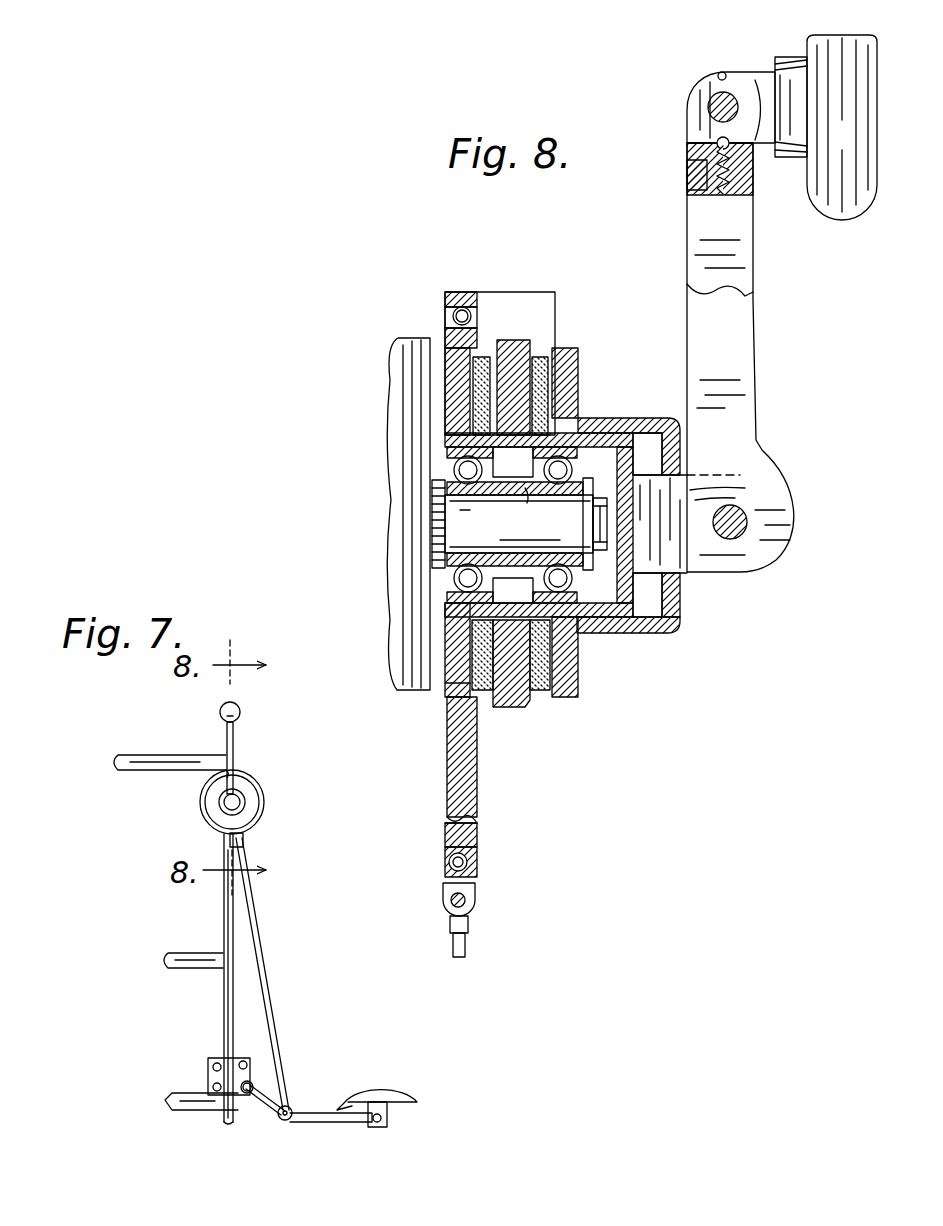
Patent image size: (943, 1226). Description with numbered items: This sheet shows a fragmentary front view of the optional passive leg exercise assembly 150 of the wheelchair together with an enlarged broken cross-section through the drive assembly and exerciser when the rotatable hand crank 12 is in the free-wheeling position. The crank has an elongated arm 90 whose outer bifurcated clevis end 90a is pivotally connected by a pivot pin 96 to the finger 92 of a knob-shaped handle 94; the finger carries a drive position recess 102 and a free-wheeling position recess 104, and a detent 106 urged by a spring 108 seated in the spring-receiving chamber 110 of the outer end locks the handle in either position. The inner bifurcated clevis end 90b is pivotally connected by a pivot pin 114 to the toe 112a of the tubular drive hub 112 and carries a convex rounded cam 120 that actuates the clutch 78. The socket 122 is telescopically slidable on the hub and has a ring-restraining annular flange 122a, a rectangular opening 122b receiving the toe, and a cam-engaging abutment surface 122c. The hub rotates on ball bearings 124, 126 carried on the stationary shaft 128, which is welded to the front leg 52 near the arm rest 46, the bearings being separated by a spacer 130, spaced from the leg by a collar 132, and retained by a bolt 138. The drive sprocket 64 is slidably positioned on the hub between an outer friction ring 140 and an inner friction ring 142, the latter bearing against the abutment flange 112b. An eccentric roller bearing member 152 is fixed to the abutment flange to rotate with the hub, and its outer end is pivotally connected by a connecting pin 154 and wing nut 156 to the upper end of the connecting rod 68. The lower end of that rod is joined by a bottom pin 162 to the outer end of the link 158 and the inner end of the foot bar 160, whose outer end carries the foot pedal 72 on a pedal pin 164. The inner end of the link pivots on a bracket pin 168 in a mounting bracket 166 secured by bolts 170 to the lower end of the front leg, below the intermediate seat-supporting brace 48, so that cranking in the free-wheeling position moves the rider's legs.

In FIG. 7, the rotatable hand crank 12 is at (240, 738).
In FIG. 7, the arm rest 46 is at (133, 755).
In FIG. 7, the intermediate seat-supporting brace 48 is at (178, 953).
In FIG. 8, the front leg 52 is at (400, 390).
In FIG. 7, the front leg 52 is at (222, 991).
In FIG. 8, the drive sprocket 64 is at (507, 342).
In FIG. 8, the connecting rod 68 is at (466, 948).
In FIG. 7, the connecting rod 68 is at (262, 960).
In FIG. 7, the foot pedal 72 is at (373, 1093).
In FIG. 8, the clutch 78 is at (588, 376).
In FIG. 7, the clutch 78 is at (212, 790).
In FIG. 8, the elongated arm 90 is at (688, 248).
In FIG. 7, the elongated arm 90 is at (226, 737).
In FIG. 8, the outer bifurcated clevis end 90a is at (688, 135).
In FIG. 8, the inner bifurcated clevis end 90b is at (742, 574).
In FIG. 8, the finger 92 is at (775, 75).
In FIG. 8, the knob-shaped handle 94 is at (840, 215).
In FIG. 7, the knob-shaped handle 94 is at (238, 708).
In FIG. 8, the pivot pin 96 is at (712, 97).
In FIG. 8, the drive position recess 102 is at (722, 72).
In FIG. 8, the free-wheeling position recess 104 is at (690, 162).
In FIG. 8, the detent 106 is at (745, 150).
In FIG. 8, the spring 108 is at (723, 193).
In FIG. 8, the spring-receiving chamber 110 is at (688, 178).
In FIG. 8, the tubular drive hub 112 is at (652, 637).
In FIG. 8, the toe 112a is at (667, 500).
In FIG. 8, the abutment flange 112b is at (447, 683).
In FIG. 8, the pivot pin 114 is at (740, 536).
In FIG. 8, the convex rounded cam 120 is at (795, 522).
In FIG. 7, the convex rounded cam 120 is at (242, 792).
In FIG. 8, the socket 122 is at (647, 417).
In FIG. 8, the ring-restraining annular flange 122a is at (562, 350).
In FIG. 8, the rectangular opening 122b is at (682, 462).
In FIG. 8, the cam-engaging abutment surface 122c is at (680, 608).
In FIG. 8, the ball bearing 124 is at (580, 620).
In FIG. 8, the ball bearing 126 is at (462, 575).
In FIG. 8, the stationary shaft 128 is at (455, 528).
In FIG. 8, the spacer 130 is at (524, 492).
In FIG. 8, the collar 132 is at (440, 483).
In FIG. 8, the bolt 138 is at (585, 528).
In FIG. 8, the outer friction ring 140 is at (545, 357).
In FIG. 8, the inner friction ring 142 is at (482, 357).
In FIG. 8, the exercise assembly 150 is at (497, 833).
In FIG. 8, the eccentric roller bearing member 152 is at (455, 293).
In FIG. 7, the eccentric roller bearing member 152 is at (207, 808).
In FIG. 8, the connecting pin 154 is at (466, 900).
In FIG. 7, the wing nut 156 is at (245, 840).
In FIG. 7, the link 158 is at (265, 1102).
In FIG. 7, the foot bar 160 is at (338, 1123).
In FIG. 7, the bottom pin 162 is at (285, 1122).
In FIG. 7, the pedal pin 164 is at (382, 1120).
In FIG. 7, the mounting bracket 166 is at (218, 1058).
In FIG. 7, the bracket pin 168 is at (253, 1084).
In FIG. 7, the bolts 170 is at (212, 1083).